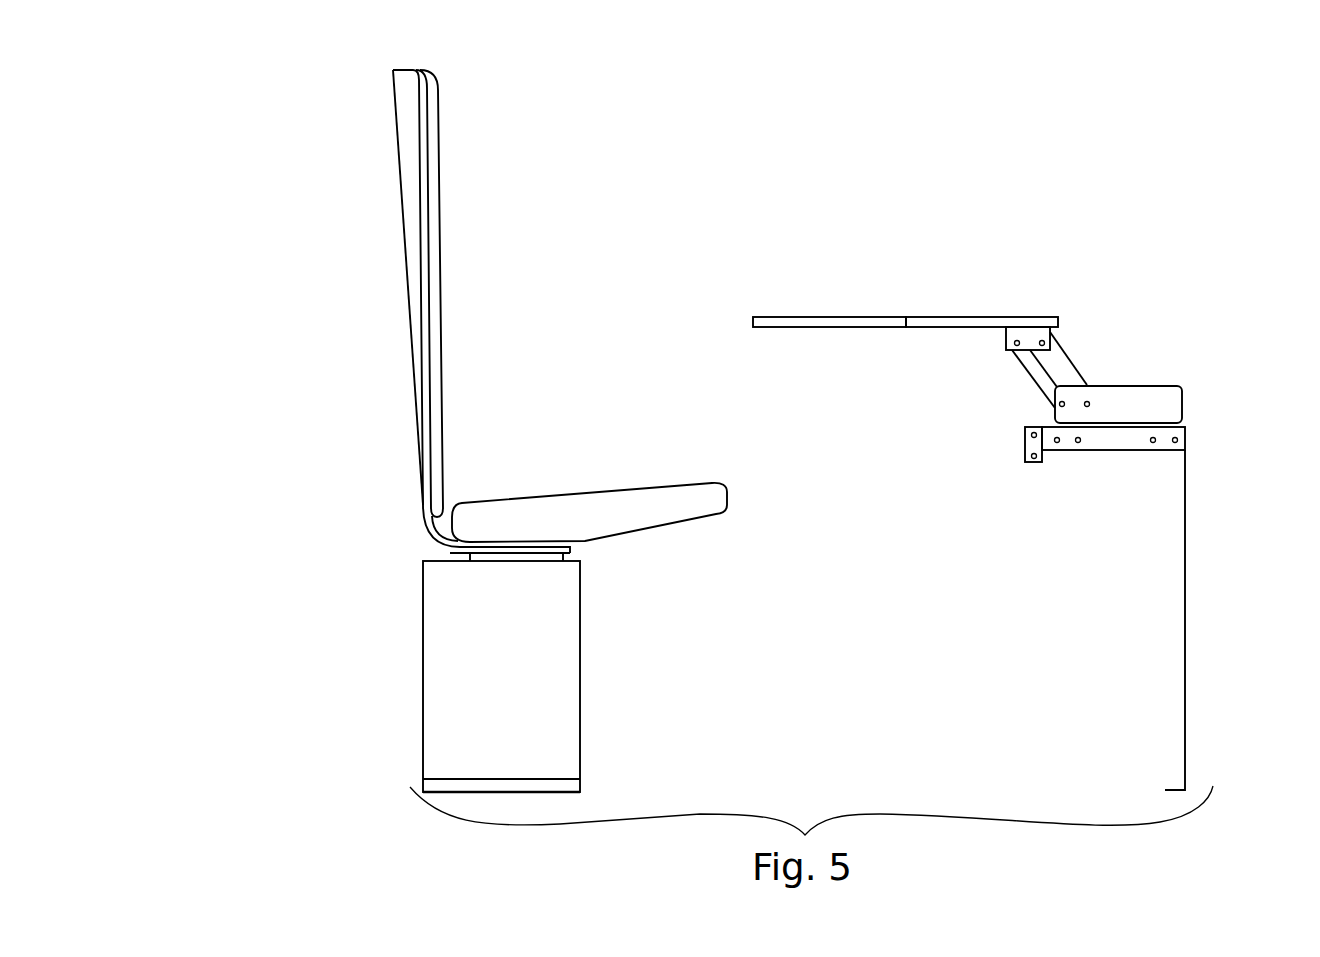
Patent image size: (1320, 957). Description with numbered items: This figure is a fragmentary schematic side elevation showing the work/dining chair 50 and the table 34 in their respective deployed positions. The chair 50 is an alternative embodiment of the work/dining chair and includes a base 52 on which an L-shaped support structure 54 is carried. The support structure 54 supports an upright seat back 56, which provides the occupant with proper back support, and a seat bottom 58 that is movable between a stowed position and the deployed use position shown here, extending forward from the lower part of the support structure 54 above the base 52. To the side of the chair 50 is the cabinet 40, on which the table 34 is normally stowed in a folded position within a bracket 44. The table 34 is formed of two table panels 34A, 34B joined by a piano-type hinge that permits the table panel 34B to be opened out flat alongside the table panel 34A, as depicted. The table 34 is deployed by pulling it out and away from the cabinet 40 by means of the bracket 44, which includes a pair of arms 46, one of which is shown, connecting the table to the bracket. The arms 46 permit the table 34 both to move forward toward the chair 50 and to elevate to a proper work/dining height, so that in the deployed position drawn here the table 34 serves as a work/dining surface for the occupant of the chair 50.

The table 34 is at (950, 194).
The table panel 34A is at (997, 317).
The table panel 34B is at (852, 317).
The cabinet 40 is at (1187, 570).
The bracket 44 is at (1145, 400).
The arm 46 is at (1043, 368).
The work/dining chair 50 is at (318, 350).
The base 52 is at (438, 660).
The L-shaped support structure 54 is at (427, 524).
The seat back 56 is at (428, 181).
The seat bottom 58 is at (608, 502).